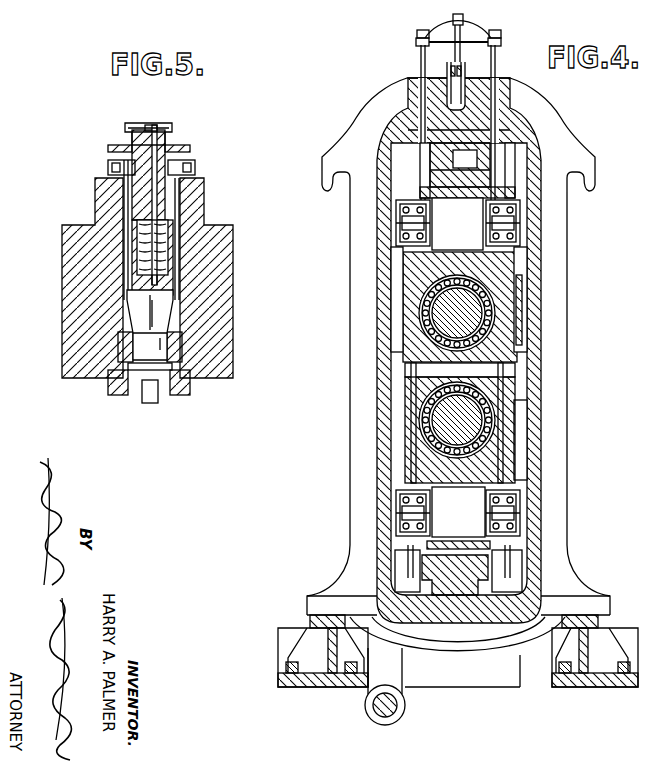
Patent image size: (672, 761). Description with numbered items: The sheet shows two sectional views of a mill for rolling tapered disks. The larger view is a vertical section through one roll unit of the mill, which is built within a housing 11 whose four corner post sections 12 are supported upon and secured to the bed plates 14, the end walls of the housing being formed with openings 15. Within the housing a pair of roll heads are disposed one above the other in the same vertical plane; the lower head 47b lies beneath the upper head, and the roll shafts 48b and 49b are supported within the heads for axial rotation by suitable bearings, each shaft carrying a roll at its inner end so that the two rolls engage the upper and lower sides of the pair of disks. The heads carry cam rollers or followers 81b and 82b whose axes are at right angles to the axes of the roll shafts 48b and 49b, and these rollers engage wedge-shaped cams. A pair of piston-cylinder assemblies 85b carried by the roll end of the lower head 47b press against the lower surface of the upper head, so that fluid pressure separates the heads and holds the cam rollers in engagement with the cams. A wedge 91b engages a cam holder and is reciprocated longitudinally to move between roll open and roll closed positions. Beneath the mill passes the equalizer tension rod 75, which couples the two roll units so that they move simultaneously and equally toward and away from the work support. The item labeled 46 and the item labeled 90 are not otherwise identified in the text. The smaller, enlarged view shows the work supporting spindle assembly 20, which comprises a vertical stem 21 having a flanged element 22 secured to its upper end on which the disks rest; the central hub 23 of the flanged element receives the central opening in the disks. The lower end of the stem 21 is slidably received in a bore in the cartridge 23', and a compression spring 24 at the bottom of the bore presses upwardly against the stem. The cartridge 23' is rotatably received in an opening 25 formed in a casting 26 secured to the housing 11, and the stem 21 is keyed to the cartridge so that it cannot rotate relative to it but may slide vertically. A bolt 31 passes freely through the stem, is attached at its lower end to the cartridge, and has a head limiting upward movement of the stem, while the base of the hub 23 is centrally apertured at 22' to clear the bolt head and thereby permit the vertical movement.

In FIG. 4, the housing 11 is at (572, 412).
In FIG. 4, the corner post sections 12 is at (349, 541).
In FIG. 4, the bed plates 14 is at (314, 688).
In FIG. 4, the openings 15 is at (521, 480).
In FIG. 5, the spindle assembly 20 is at (212, 156).
In FIG. 5, the vertical stem 21 is at (168, 137).
In FIG. 5, the flanged element 22 is at (122, 124).
In FIG. 5, the central aperture 22' is at (165, 106).
In FIG. 5, the central hub 23 is at (144, 189).
In FIG. 5, the cartridge 23' is at (195, 239).
In FIG. 5, the compression spring 24 is at (158, 253).
In FIG. 5, the opening 25 is at (174, 288).
In FIG. 5, the casting 26 is at (218, 325).
In FIG. 5, the bolt 31 is at (128, 190).
In FIG. 4, the bearing housing 46 is at (541, 260).
In FIG. 4, the lower roll head 47b is at (506, 450).
In FIG. 4, the roll shaft 48b is at (476, 313).
In FIG. 4, the roll shaft 49b is at (354, 341).
In FIG. 4, the equalizer tension rod 75 is at (392, 708).
In FIG. 4, the cam roller 81b is at (458, 224).
In FIG. 4, the cam roller 82b is at (458, 512).
In FIG. 4, the piston-cylinder assemblies 85b is at (516, 370).
In FIG. 4, the upper gland 90 is at (470, 173).
In FIG. 4, the wedge 91b is at (422, 566).